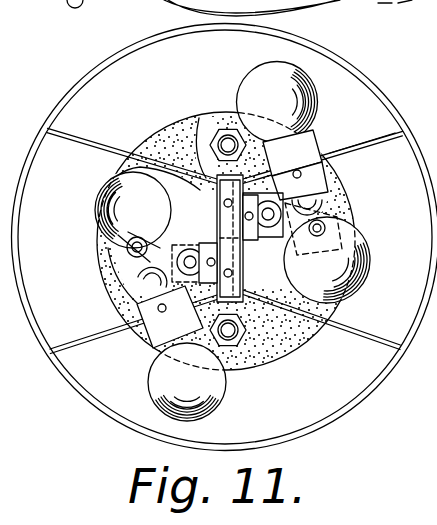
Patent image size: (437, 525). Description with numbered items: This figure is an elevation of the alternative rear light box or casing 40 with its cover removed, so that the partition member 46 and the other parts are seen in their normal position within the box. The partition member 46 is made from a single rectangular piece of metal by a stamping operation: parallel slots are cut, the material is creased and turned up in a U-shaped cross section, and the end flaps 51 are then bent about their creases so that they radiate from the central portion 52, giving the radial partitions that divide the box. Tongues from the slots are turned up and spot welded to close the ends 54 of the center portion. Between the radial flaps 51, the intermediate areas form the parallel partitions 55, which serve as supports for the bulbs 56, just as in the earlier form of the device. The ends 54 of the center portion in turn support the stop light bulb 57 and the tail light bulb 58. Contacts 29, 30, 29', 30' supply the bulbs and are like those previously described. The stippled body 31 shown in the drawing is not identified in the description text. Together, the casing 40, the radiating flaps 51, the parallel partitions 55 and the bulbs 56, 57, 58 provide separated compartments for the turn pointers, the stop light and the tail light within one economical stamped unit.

The contact 29 is at (308, 237).
The contact 29' is at (330, 172).
The contact 30 is at (139, 229).
The contact 30' is at (132, 307).
The stippled friction body 31 is at (163, 128).
The rear light box or casing 40 is at (363, 407).
The partition member 46 is at (385, 132).
The end flaps 51 is at (96, 138).
The central portion 52 is at (233, 214).
The ends of the center portion 54 is at (212, 152).
The parallel partitions 55 is at (223, 225).
The bulbs 56 is at (97, 196).
The stop light bulb 57 is at (305, 107).
The tail light bulb 58 is at (148, 379).